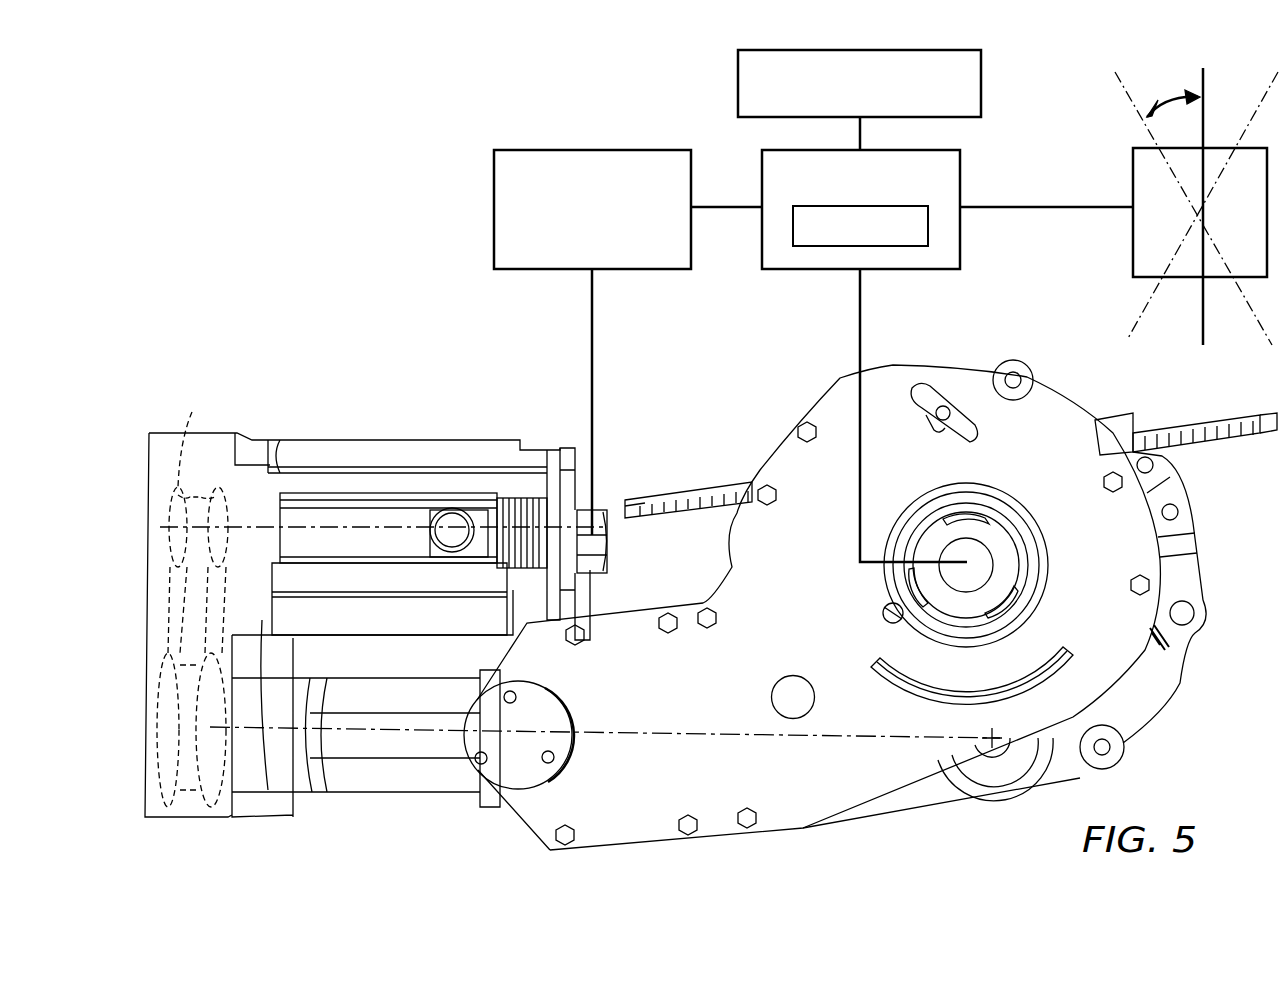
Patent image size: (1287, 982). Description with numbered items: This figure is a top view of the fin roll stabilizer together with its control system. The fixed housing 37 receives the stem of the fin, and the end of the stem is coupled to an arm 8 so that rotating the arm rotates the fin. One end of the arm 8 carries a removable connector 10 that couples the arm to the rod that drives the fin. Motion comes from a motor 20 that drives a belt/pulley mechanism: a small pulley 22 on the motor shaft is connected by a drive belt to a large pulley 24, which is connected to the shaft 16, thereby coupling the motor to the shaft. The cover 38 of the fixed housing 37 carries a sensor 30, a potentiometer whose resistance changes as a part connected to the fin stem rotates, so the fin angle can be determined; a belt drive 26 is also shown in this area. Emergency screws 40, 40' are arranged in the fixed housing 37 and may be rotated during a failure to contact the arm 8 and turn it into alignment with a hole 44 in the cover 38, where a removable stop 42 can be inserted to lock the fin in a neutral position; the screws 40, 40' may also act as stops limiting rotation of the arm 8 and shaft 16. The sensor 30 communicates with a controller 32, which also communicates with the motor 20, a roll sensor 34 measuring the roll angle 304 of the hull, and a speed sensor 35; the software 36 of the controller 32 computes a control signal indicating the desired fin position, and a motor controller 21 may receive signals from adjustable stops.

The arm 8 is at (1017, 790).
The connector 10 is at (990, 757).
The shaft 16 is at (270, 770).
The motor 20 is at (415, 492).
The motor controller 21 is at (494, 232).
The small pulley 22 is at (207, 607).
The large pulley 24 is at (162, 800).
The belt drive 26 is at (200, 598).
The sensor 30 is at (975, 570).
The controller 32 is at (762, 187).
The roll sensor 34 is at (1133, 230).
The speed sensor 35 is at (738, 90).
The software 36 is at (793, 228).
The fixed housing 37 is at (1138, 712).
The cover 38 is at (800, 798).
The emergency screw 40 is at (1186, 416).
The emergency screw 40' is at (688, 481).
The removable stop 42 is at (935, 402).
The hole 44 is at (934, 432).
The roll angle 304 is at (1168, 102).